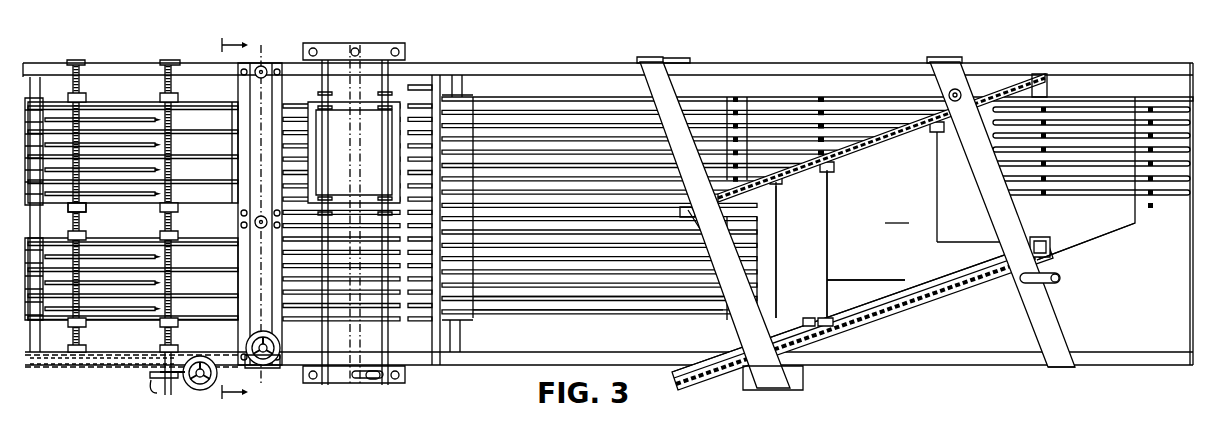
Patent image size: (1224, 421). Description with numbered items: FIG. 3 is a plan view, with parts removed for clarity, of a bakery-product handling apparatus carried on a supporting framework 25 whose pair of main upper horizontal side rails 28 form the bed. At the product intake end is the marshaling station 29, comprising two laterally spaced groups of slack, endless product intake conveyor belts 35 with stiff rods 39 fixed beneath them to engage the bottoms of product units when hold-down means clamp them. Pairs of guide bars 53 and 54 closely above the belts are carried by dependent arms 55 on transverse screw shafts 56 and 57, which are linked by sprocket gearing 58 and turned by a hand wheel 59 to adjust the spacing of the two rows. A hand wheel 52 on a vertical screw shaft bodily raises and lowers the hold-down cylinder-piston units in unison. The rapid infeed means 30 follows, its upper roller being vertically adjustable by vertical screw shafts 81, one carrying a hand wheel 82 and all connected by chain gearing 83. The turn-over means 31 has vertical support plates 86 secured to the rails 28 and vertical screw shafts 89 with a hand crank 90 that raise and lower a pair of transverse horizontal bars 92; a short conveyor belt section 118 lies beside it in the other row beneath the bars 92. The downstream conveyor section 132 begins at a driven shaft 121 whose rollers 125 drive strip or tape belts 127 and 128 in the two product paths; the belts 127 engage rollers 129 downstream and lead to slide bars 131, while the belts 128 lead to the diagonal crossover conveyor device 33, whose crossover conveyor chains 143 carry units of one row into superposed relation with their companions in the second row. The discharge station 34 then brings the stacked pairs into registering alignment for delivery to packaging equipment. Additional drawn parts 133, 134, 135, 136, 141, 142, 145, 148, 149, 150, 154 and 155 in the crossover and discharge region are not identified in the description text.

The supporting framework 25 is at (860, 374).
The main upper horizontal side rails 28 is at (770, 63).
The product marshaling station 29 is at (112, 376).
The rapid infeed means 30 is at (272, 378).
The product inverting or turn-over means 31 is at (408, 82).
The diagonal crossover conveyor device 33 is at (912, 318).
The discharge station 34 is at (1119, 90).
The product intake conveyor belts 35 is at (133, 123).
The stiff rods 39 is at (128, 298).
The hand wheel 52 is at (200, 387).
The guide bars 53 is at (213, 102).
The guide bars 54 is at (87, 207).
The dependent arms 55 is at (88, 102).
The transverse screw shaft 56 is at (172, 221).
The transverse screw shaft 57 is at (72, 221).
The sprocket gearing 58 is at (143, 360).
The hand wheel 59 is at (157, 380).
The vertical screw shafts 81 is at (263, 68).
The hand wheel 82 is at (253, 368).
The chain gearing 83 is at (268, 308).
The vertical support plates 86 is at (400, 44).
The vertical screw shafts 89 is at (353, 52).
The hand crank 90 is at (368, 380).
The transverse horizontal bars 92 is at (323, 343).
The conveyor belt section 118 is at (395, 302).
The shaft 121 is at (462, 342).
The rollers 125 is at (465, 97).
The strip or tape belts 127 is at (587, 127).
The strip or tape belts 128 is at (630, 310).
The rollers 129 is at (742, 137).
The slide bars 131 is at (1167, 113).
The conveyor section 132 is at (545, 322).
The upper link bar 133 is at (900, 127).
The lower link bar 134 is at (963, 290).
The lever arm 135 is at (693, 185).
The lever arm 136 is at (1057, 328).
The frame member 141 is at (767, 216).
The frame member 142 is at (828, 247).
The crossover conveyor chains 143 is at (803, 330).
The cross member 145 is at (850, 280).
The rail 148 is at (880, 312).
The end plate 149 is at (1110, 228).
The end slats 150 is at (1087, 160).
The bolt 154 is at (1046, 120).
The bolt 155 is at (823, 93).